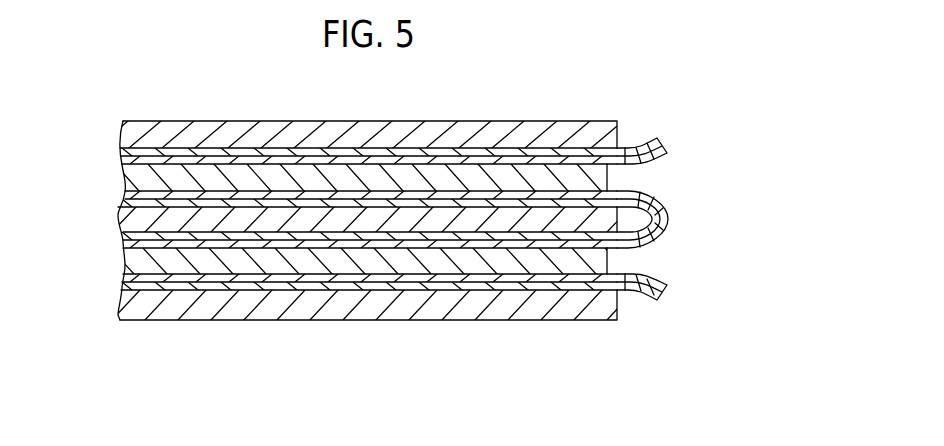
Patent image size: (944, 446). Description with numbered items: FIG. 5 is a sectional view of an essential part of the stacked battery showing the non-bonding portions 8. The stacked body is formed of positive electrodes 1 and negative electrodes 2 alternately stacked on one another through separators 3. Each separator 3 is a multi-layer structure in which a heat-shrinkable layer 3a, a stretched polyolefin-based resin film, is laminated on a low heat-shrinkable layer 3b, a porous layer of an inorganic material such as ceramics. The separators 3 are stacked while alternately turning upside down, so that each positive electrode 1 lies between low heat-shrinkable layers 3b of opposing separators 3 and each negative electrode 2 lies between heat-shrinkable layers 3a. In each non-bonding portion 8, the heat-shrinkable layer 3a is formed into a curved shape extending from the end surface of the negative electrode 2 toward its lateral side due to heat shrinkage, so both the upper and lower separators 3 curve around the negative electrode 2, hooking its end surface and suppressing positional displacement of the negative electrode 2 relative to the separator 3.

The positive electrode 1 is at (124, 177).
The negative electrode 2 is at (119, 139).
The separator 3 is at (455, 219).
The heat-shrinkable layer 3a is at (658, 140).
The low heat-shrinkable layer 3b is at (668, 153).
The non-bonding portion 8 is at (665, 116).